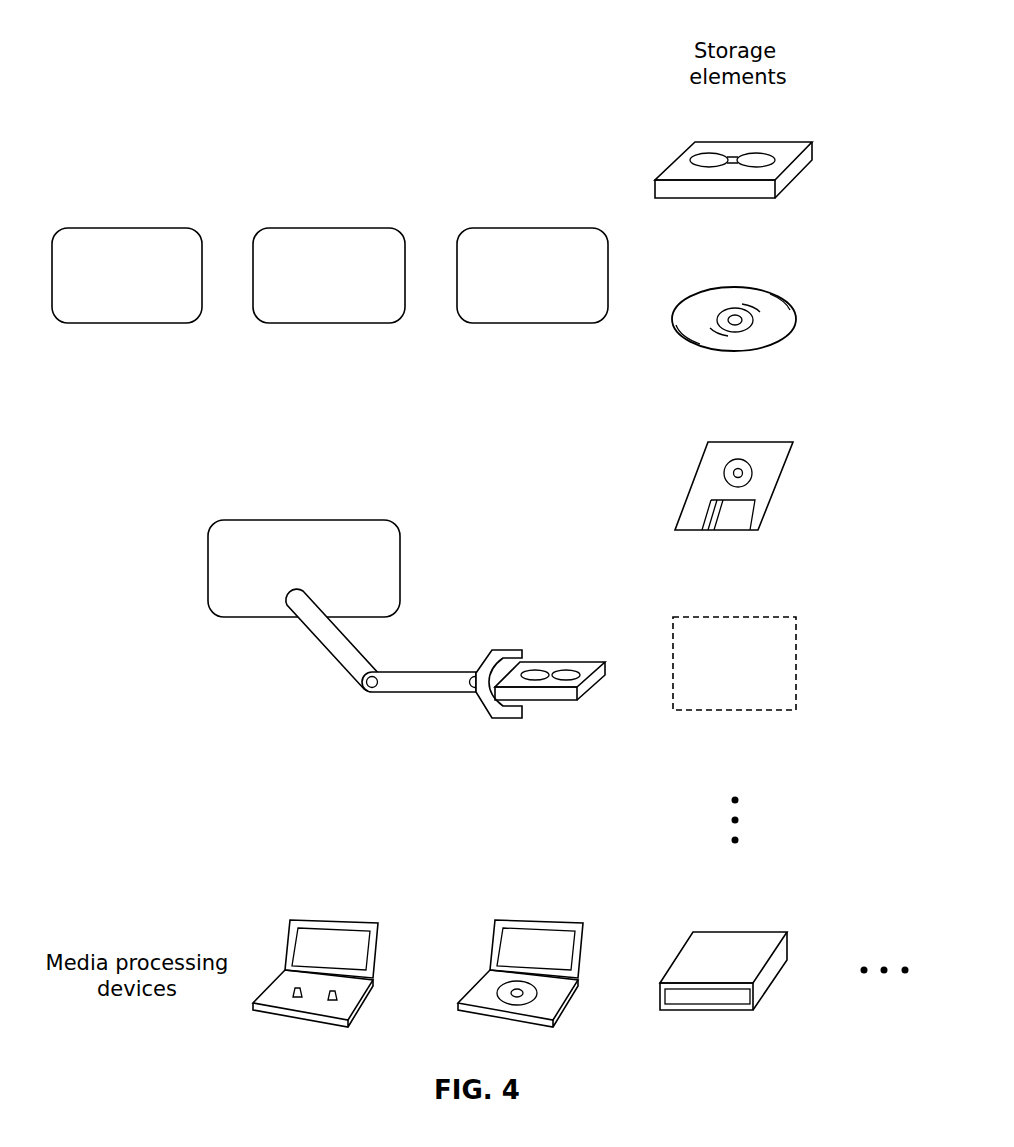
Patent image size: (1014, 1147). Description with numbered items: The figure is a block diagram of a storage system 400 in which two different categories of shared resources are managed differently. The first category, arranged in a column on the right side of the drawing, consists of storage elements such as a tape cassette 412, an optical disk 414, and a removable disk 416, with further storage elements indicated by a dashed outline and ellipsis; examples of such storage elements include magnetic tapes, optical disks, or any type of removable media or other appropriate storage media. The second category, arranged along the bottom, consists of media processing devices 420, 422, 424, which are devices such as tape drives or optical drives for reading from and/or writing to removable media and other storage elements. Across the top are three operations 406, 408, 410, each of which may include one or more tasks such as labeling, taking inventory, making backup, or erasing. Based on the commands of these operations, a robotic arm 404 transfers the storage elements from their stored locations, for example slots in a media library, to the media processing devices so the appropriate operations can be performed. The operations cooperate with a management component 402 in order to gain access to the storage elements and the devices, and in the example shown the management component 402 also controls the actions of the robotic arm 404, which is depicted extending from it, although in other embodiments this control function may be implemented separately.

The system 400 is at (142, 38).
The management component 402 is at (272, 518).
The robotic arm 404 is at (344, 670).
The operation 406 is at (116, 226).
The operation 408 is at (318, 226).
The operation 410 is at (522, 226).
The storage element 412 is at (720, 142).
The storage element 414 is at (738, 286).
The storage element 416 is at (740, 440).
The media processing device 420 is at (318, 918).
The media processing device 422 is at (523, 918).
The media processing device 424 is at (723, 932).